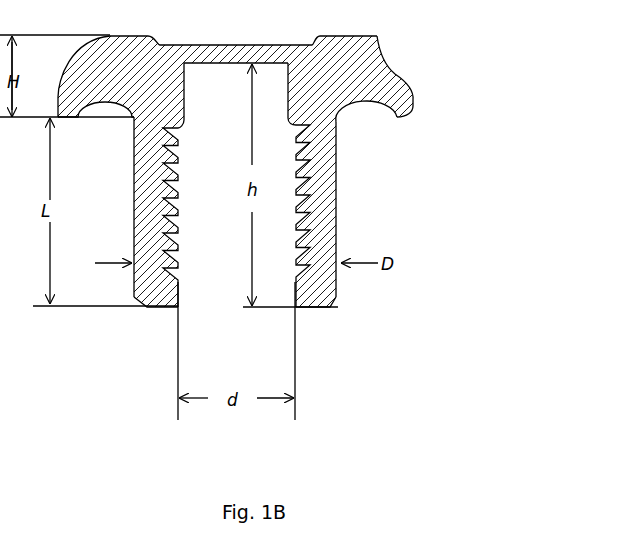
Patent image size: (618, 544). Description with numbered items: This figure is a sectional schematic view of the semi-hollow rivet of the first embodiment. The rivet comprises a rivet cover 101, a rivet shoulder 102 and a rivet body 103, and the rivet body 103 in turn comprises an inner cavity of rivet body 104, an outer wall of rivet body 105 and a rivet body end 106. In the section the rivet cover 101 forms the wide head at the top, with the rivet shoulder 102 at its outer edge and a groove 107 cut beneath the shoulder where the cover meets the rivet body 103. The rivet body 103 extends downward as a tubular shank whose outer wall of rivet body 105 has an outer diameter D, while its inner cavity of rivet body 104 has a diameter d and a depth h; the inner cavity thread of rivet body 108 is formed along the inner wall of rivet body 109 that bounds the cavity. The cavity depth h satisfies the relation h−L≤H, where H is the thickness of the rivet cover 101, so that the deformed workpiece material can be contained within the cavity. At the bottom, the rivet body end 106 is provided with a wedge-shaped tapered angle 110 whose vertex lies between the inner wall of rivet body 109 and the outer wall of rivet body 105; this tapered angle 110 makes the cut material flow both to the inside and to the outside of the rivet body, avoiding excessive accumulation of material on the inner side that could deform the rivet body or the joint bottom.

The rivet cover 101 is at (105, 45).
The rivet shoulder 102 is at (398, 80).
The rivet body 103 is at (326, 189).
The inner cavity of rivet body 104 is at (230, 290).
The outer wall of rivet body 105 is at (134, 197).
The rivet body end 106 is at (333, 303).
The groove 107 is at (366, 113).
The inner cavity thread of rivet body 108 is at (171, 184).
The inner wall of rivet body 109 is at (187, 100).
The tapered angle 110 is at (152, 311).